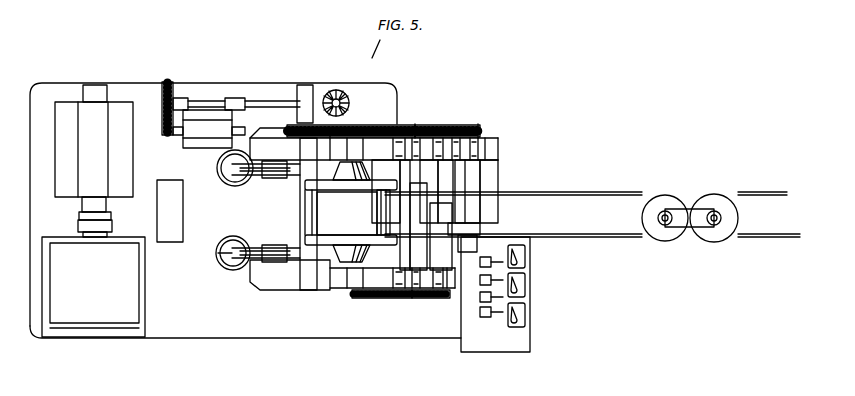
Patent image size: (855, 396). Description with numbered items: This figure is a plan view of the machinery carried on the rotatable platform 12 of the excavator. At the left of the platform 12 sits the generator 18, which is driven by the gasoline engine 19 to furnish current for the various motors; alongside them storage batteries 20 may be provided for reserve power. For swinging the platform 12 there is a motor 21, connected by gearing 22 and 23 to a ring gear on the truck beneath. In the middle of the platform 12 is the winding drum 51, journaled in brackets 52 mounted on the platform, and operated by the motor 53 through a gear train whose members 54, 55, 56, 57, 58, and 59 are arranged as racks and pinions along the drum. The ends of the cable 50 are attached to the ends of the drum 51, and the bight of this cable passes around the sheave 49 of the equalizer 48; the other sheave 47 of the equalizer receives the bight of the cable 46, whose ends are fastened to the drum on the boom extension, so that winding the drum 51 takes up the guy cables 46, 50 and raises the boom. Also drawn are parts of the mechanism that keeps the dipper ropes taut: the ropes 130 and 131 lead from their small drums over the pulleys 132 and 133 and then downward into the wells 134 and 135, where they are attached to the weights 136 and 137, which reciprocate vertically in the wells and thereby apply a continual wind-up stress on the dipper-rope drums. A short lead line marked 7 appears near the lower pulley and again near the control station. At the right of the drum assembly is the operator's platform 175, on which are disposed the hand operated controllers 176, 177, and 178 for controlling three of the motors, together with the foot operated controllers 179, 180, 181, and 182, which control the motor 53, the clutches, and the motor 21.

The lead line 7 is at (218, 253).
The platform 12 is at (212, 322).
The generator 18 is at (70, 112).
The gasoline engine 19 is at (72, 318).
The storage batteries 20 is at (157, 208).
The motor 21 is at (190, 148).
The gearing 22 is at (172, 100).
The gearing 23 is at (338, 90).
The cable 46 is at (771, 198).
The sheave 47 is at (714, 203).
The equalizer 48 is at (690, 230).
The sheave 49 is at (667, 204).
The cable 50 is at (599, 194).
The winding drum 51 is at (330, 228).
The brackets 52 is at (378, 146).
The motor 53 is at (489, 171).
The gear train member 54 is at (483, 128).
The gear train member 55 is at (437, 125).
The gear train member 56 is at (440, 300).
The gear train member 57 is at (378, 298).
The gear train member 58 is at (410, 125).
The gear train member 59 is at (356, 126).
The rope 130 is at (281, 179).
The rope 131 is at (267, 250).
The pulley 132 is at (246, 179).
The pulley 133 is at (240, 245).
The well 134 is at (218, 166).
The well 135 is at (228, 270).
The weight 136 is at (229, 177).
The weight 137 is at (220, 260).
The operator's platform 175 is at (520, 335).
The hand operated controller 176 is at (528, 262).
The hand operated controller 177 is at (528, 284).
The hand operated controller 178 is at (528, 305).
The foot operated controller 179 is at (487, 257).
The foot operated controller 180 is at (485, 280).
The foot operated controller 181 is at (482, 302).
The foot operated controller 182 is at (495, 317).